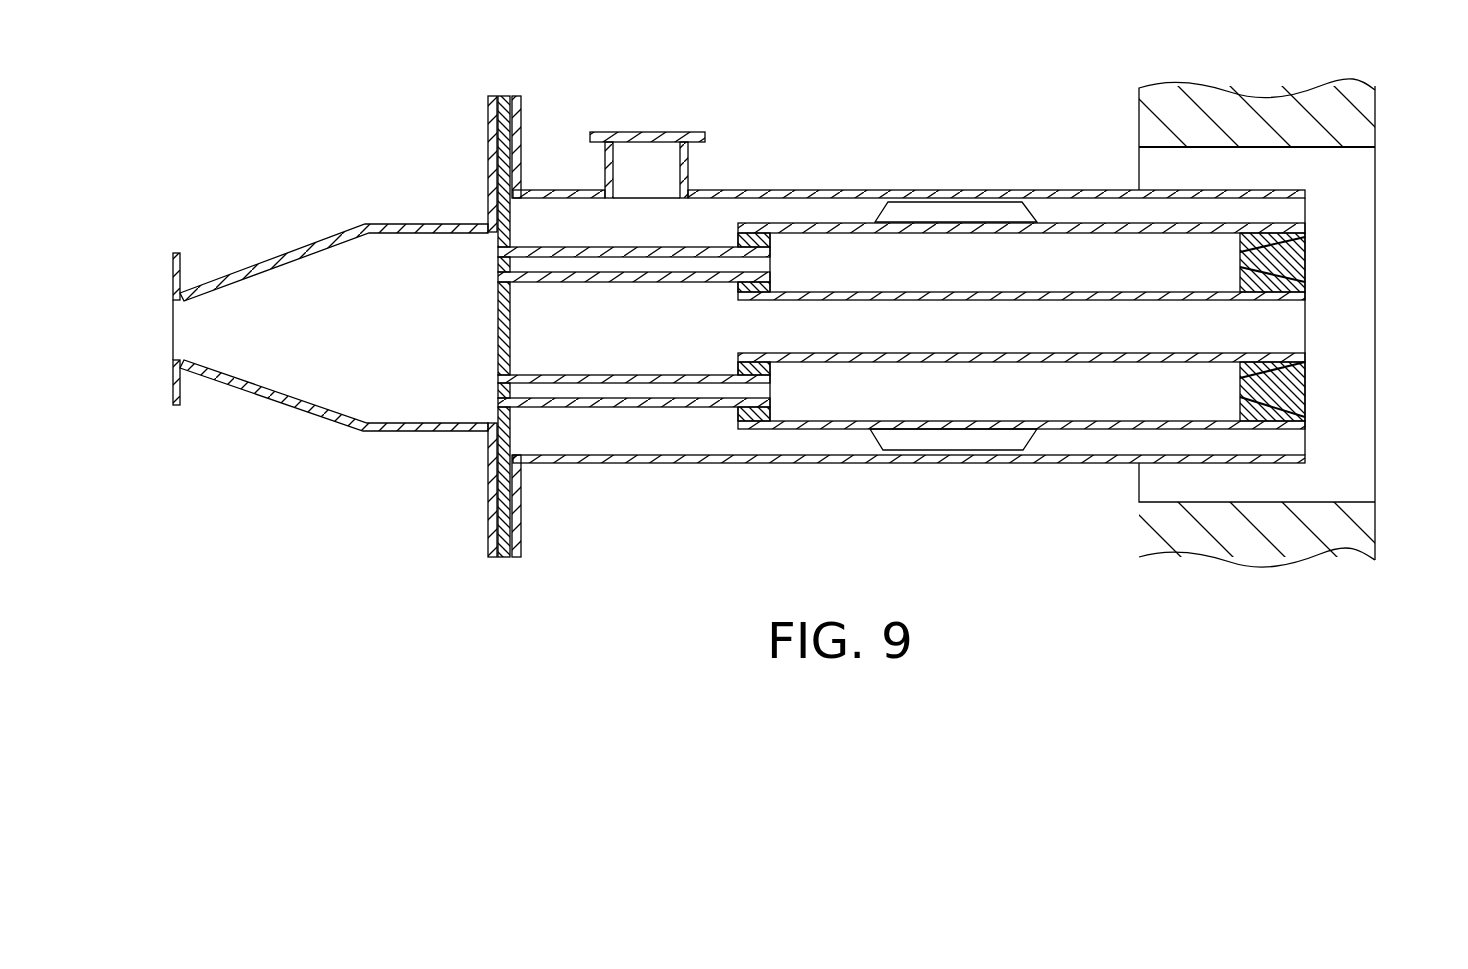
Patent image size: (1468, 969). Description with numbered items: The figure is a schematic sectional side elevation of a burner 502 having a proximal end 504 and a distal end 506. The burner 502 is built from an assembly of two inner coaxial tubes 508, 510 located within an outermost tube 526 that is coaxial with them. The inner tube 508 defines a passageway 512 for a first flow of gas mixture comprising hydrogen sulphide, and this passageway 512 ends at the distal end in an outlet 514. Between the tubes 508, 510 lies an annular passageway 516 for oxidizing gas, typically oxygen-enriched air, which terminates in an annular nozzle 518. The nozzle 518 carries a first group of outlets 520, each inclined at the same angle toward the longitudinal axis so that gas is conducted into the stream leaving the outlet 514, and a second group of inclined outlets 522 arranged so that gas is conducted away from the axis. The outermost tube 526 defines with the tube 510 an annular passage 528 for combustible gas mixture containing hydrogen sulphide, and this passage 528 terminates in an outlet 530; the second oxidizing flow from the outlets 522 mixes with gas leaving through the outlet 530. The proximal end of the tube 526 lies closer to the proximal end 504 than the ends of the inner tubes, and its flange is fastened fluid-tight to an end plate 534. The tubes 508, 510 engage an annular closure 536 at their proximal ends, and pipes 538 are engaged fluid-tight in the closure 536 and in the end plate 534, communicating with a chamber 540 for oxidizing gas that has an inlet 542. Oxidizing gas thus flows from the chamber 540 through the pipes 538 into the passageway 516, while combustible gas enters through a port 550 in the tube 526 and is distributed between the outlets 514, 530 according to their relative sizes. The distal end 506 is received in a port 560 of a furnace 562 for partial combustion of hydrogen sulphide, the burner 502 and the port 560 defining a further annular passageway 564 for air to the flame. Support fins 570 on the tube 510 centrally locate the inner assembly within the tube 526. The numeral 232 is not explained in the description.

The flange plate 232 is at (521, 522).
The burner 502 is at (973, 369).
The proximal end 504 is at (243, 422).
The distal end 506 is at (1332, 322).
The inner tube 508 is at (1085, 220).
The inner coaxial tube 510 is at (935, 222).
The passageway 512 is at (996, 339).
The outlet 514 is at (1267, 333).
The annular passageway 516 is at (1071, 382).
The annular nozzle 518 is at (1305, 392).
The first group of outlets 520 is at (1336, 265).
The second group of inclined outlets 522 is at (1305, 237).
The outermost tube 526 is at (964, 480).
The annular passage 528 is at (1068, 212).
The outlet 530 is at (1305, 200).
The end plate 534 is at (529, 296).
The annular closure 536 is at (745, 430).
The pipes 538 is at (607, 247).
The chamber 540 is at (383, 341).
The inlet 542 is at (193, 328).
The port 550 is at (658, 148).
The port 560 is at (1235, 532).
The furnace 562 is at (1291, 352).
The further annular passageway 564 is at (1278, 482).
The support fins 570 is at (998, 442).